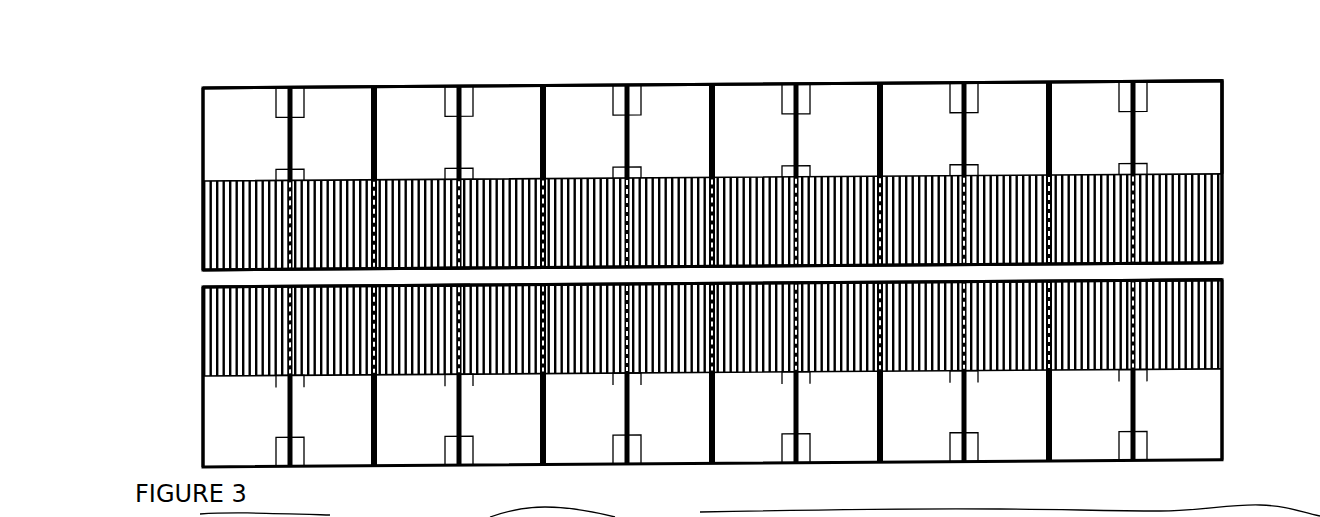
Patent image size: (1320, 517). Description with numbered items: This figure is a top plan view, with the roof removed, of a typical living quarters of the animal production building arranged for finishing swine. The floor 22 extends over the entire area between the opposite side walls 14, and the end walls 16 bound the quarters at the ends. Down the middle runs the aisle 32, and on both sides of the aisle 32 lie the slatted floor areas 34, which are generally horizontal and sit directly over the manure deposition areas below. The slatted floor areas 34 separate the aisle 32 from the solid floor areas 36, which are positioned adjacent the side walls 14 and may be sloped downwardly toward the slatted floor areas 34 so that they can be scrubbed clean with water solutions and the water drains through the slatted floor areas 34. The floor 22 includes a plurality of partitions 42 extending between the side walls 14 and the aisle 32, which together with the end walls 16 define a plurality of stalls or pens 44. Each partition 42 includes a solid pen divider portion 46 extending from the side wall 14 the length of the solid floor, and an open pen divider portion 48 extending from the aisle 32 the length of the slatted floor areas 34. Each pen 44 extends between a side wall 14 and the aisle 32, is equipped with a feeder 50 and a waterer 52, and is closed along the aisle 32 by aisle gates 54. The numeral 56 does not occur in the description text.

The side walls 14 is at (578, 88).
The end walls 16 is at (202, 326).
The floor 22 is at (489, 88).
The aisle 32 is at (1187, 284).
The slatted floor areas 34 is at (1196, 222).
The solid floor areas 36 is at (1197, 128).
The partitions 42 is at (292, 140).
The pens 44 is at (823, 117).
The solid pen divider portion 46 is at (291, 140).
The open pen divider portion 48 is at (290, 232).
The feeder 50 is at (298, 92).
The waterer 52 is at (298, 172).
The aisle gates 54 is at (440, 285).
The edge member 56 is at (1213, 286).